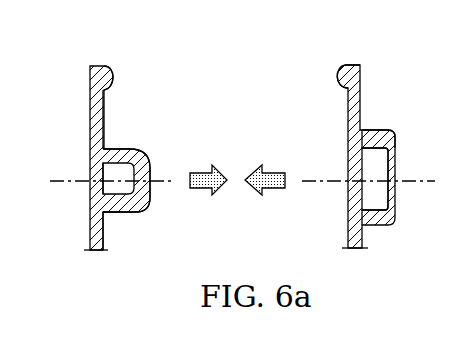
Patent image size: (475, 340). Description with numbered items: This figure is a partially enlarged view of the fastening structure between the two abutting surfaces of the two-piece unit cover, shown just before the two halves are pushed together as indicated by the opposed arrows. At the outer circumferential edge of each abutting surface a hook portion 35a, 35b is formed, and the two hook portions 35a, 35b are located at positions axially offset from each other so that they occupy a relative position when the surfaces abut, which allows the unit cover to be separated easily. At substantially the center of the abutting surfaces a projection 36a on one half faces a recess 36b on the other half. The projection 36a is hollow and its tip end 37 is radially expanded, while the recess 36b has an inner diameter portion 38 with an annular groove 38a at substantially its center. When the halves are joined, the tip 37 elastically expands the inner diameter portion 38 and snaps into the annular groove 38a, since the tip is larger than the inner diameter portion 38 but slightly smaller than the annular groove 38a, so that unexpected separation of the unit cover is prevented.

The hook portion 35a is at (114, 72).
The hook portion 35b is at (337, 76).
The projection 36a is at (113, 209).
The recess 36b is at (390, 131).
The tip end 37 is at (128, 146).
The inner diameter portion 38 is at (361, 193).
The annular groove 38a is at (372, 162).